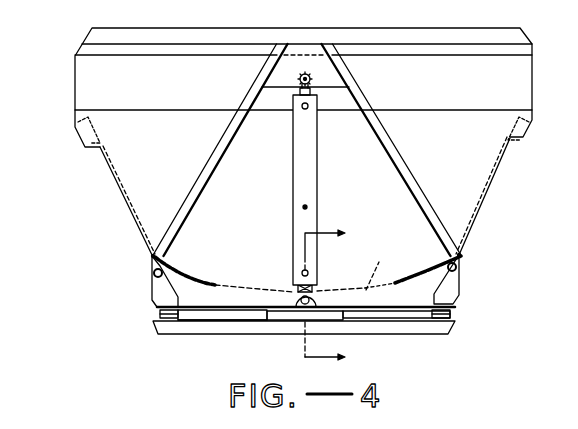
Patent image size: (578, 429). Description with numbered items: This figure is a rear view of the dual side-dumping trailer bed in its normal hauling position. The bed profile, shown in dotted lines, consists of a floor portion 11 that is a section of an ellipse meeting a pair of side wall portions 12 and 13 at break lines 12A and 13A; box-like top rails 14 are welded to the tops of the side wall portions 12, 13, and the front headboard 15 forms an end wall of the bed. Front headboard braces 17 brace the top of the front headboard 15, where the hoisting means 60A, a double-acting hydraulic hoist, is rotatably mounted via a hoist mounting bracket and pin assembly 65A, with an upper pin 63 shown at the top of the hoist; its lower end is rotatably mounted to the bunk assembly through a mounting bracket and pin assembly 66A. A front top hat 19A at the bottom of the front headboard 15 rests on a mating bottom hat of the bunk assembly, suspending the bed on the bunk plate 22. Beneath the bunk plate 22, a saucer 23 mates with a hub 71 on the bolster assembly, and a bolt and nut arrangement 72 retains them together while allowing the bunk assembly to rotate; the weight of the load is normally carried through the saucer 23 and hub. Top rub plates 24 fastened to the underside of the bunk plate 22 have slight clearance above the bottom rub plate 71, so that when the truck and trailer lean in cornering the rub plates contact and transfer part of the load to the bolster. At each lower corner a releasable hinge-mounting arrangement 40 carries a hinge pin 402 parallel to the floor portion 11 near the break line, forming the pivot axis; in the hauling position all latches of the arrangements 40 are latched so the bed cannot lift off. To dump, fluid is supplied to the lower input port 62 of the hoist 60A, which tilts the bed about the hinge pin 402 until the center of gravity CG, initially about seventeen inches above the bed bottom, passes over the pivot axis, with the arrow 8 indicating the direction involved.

The direction arrow 8 is at (331, 292).
The floor portion 11 is at (382, 267).
The side wall portion 12 is at (492, 173).
The break line 12A is at (463, 251).
The side wall portion 13 is at (122, 181).
The break line 13A is at (150, 258).
The top rail 14 is at (80, 136).
The front headboard 15 is at (373, 205).
The front headboard brace 17 is at (219, 152).
The front top hat 19A is at (423, 305).
The bunk plate 22 is at (400, 312).
The saucer 23 is at (343, 314).
The top rub plate 24 is at (158, 313).
The releasable hinge-mounting arrangement 40 is at (133, 318).
The hoisting means 60A is at (293, 180).
The lower input port 62 is at (309, 271).
The upper cylinder pin 63 is at (303, 108).
The hoist mounting bracket and pin assembly 65A is at (326, 80).
The mounting bracket and pin assembly 66A is at (292, 302).
The hub 71 is at (457, 327).
The bolt and nut arrangement 72 is at (288, 322).
The hinge pin 402 is at (152, 276).
The center of gravity CG is at (303, 208).